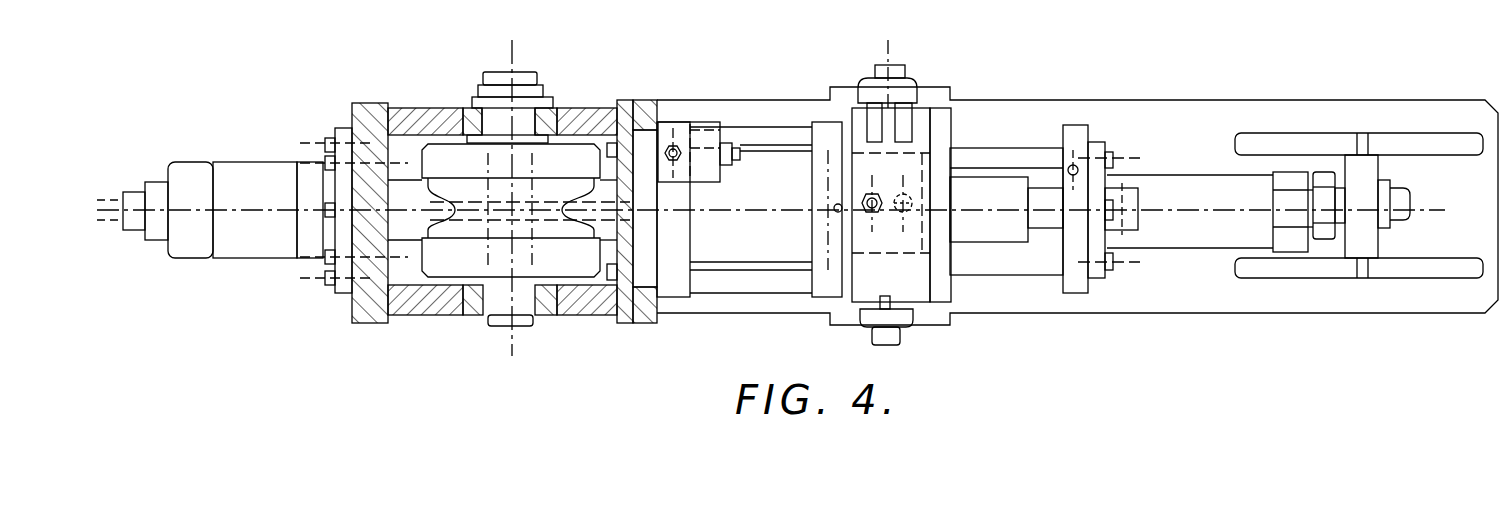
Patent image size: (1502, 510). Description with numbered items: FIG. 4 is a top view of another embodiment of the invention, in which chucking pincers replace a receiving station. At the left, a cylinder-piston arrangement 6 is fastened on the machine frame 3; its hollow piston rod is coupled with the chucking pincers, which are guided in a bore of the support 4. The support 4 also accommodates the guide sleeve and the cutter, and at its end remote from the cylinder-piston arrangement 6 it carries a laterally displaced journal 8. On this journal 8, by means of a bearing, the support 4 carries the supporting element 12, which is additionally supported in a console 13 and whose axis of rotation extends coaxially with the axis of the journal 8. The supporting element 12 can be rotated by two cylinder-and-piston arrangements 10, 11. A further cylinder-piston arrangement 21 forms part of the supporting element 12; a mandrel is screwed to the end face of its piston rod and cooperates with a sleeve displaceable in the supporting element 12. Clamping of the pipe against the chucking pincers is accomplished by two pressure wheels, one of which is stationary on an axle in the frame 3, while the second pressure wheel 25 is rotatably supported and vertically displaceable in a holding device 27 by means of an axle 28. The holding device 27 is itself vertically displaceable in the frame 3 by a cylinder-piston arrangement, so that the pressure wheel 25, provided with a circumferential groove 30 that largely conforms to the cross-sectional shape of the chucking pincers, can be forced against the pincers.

The machine frame 3 is at (352, 312).
The support 4 is at (760, 160).
The cylinder-piston arrangement 6 is at (253, 165).
The journal 8 is at (913, 172).
The cylinder-and-piston arrangement 10 is at (912, 84).
The cylinder-and-piston arrangement 11 is at (925, 326).
The supporting element 12 is at (1112, 285).
The console 13 is at (1380, 246).
The cylinder-piston arrangement 21 is at (1178, 176).
The second pressure wheel 25 is at (450, 265).
The holding device 27 is at (455, 116).
The axle 28 is at (514, 120).
The groove 30 is at (558, 190).